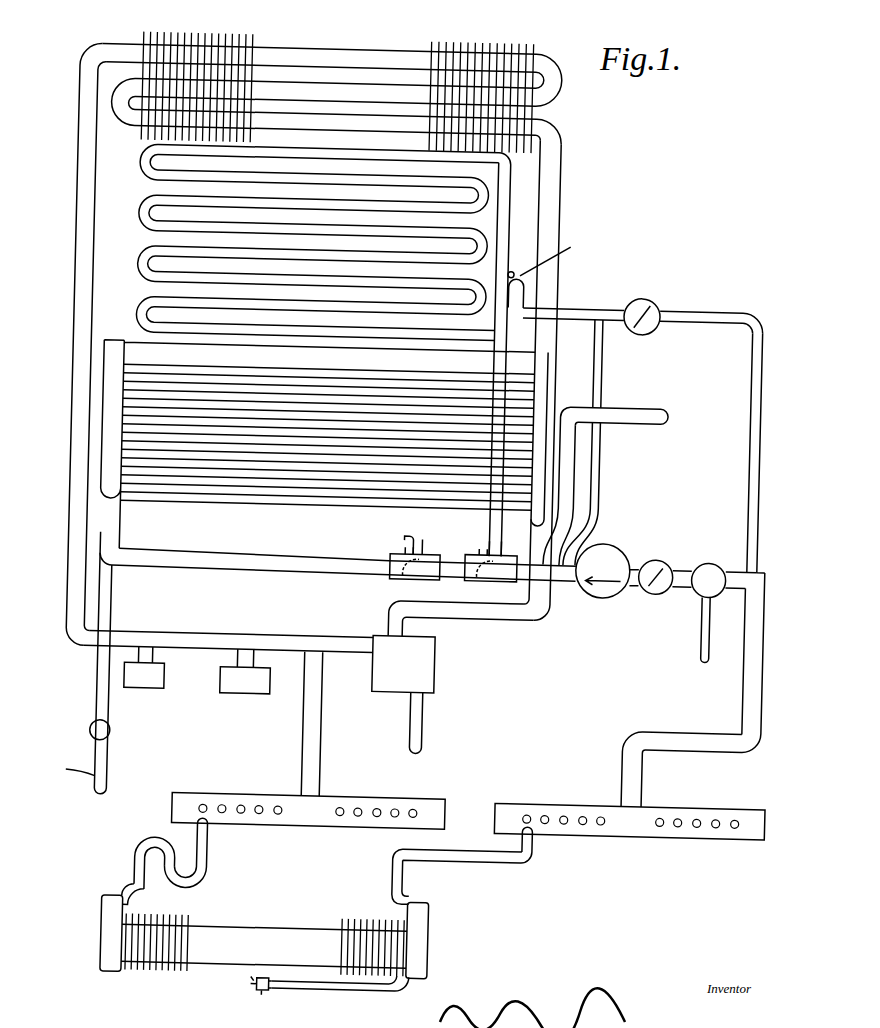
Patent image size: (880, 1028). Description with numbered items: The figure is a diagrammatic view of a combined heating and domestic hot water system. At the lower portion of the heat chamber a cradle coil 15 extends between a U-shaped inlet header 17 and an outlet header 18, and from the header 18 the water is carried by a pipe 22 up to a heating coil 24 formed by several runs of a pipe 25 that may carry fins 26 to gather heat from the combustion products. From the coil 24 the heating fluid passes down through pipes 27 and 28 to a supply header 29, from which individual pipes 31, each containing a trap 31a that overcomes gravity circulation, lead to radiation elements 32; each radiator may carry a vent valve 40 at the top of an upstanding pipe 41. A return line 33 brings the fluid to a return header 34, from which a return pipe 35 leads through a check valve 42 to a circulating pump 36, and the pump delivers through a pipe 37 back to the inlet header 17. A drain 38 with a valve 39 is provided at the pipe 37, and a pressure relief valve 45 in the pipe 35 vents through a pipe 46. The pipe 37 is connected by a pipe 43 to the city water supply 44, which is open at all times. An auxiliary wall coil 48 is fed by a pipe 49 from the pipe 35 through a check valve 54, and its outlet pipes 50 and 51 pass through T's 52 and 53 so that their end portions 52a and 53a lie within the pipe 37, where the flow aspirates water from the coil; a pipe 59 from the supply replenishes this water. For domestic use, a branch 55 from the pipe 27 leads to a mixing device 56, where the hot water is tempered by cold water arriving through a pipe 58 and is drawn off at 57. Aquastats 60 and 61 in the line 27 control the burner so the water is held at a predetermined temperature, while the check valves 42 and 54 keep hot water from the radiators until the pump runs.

The cradle coil 15 is at (194, 520).
The inlet header 17 is at (100, 474).
The outlet header 18 is at (546, 412).
The pipe 22 is at (546, 203).
The heating coil 24 is at (570, 100).
The pipe 25 is at (351, 57).
The fins 26 is at (242, 40).
The pipe 27 is at (69, 366).
The pipe 28 is at (326, 747).
The supply header 29 is at (306, 829).
The outlet pipe 31 is at (143, 867).
The trap 31a is at (214, 861).
The radiation element 32 is at (192, 932).
The return line 33 is at (467, 861).
The return header 34 is at (632, 832).
The return pipe 35 is at (677, 730).
The circulating pump 36 is at (612, 593).
The pipe 37 is at (301, 583).
The drain 38 is at (113, 623).
The valve 39 is at (95, 738).
The vent valve 40 is at (271, 999).
The upstanding pipe 41 is at (348, 994).
The check valve 42 is at (661, 555).
The pipe 43 is at (598, 477).
The city water supply 44 is at (646, 404).
The pressure relief valve 45 is at (713, 557).
The pipe 46 is at (704, 616).
The coil 48 is at (130, 254).
The pipe 49 is at (758, 353).
The outlet pipe 50 is at (424, 539).
The outlet pipe 51 is at (503, 541).
The T 52 is at (415, 580).
The end portion of outlet pipe 52a is at (400, 560).
The T 53 is at (490, 580).
The end portion of outlet pipe 53a is at (480, 560).
The check valve 54 is at (644, 296).
The branch 55 is at (352, 639).
The mixing device 56 is at (440, 661).
The domestic hot water outlet 57 is at (427, 724).
The pipe 58 is at (510, 619).
The pipe 59 is at (598, 353).
The aquastat 60 is at (146, 696).
The aquastat 61 is at (236, 699).